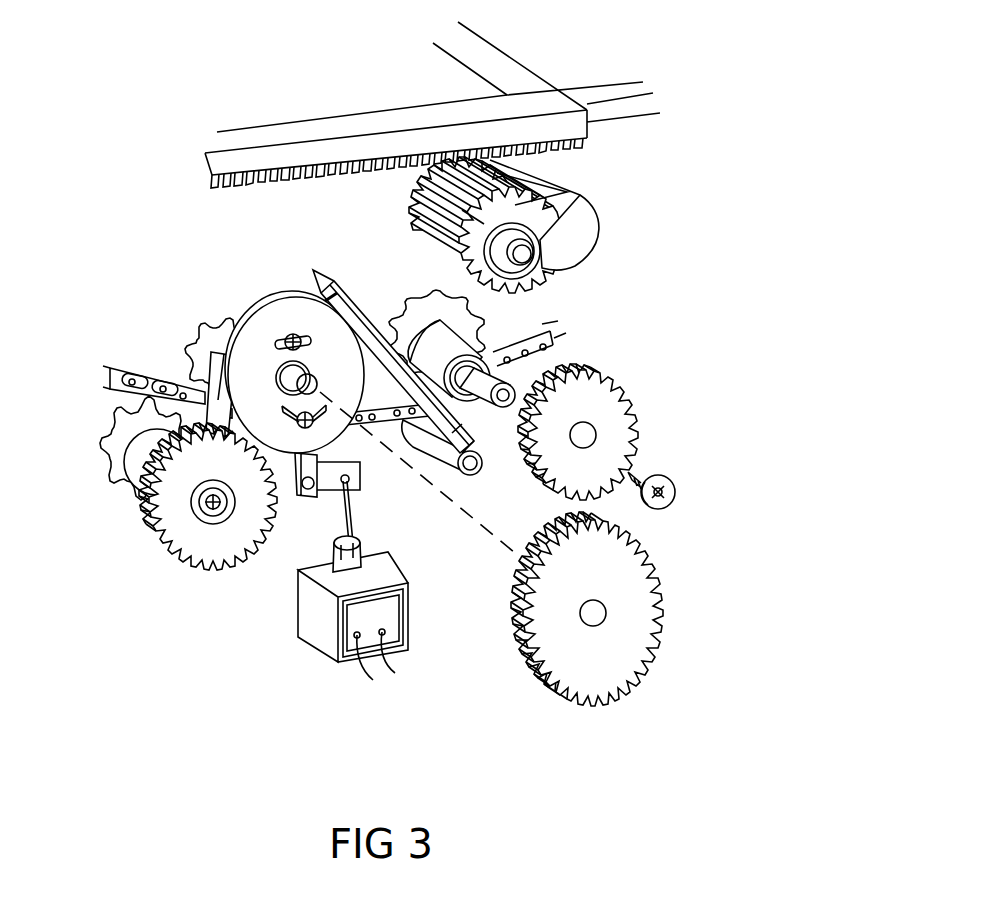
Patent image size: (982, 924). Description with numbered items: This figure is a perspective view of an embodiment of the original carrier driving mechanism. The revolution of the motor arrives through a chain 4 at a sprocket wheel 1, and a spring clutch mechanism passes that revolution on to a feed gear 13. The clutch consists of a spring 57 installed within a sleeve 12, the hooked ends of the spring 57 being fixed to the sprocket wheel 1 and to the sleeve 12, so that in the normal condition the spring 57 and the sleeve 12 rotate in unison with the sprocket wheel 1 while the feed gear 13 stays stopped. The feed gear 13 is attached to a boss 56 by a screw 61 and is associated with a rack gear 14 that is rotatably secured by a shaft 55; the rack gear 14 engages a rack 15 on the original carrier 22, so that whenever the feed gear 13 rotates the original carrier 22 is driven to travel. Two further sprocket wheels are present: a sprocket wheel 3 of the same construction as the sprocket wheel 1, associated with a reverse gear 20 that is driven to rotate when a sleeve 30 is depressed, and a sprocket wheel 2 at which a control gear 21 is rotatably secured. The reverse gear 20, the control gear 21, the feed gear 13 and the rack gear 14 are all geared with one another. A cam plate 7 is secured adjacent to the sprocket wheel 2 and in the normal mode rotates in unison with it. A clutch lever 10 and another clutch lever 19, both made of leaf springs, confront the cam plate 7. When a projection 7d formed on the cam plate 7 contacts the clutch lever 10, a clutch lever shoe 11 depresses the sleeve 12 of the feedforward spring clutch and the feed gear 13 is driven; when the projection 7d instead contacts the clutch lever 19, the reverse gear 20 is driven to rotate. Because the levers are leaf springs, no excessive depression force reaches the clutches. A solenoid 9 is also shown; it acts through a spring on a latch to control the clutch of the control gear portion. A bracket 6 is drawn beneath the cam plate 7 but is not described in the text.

The original carrier 22 is at (515, 66).
The rack 15 is at (570, 147).
The rack gear 14 is at (523, 202).
The shaft 55 is at (530, 257).
The sprocket wheel 1 is at (420, 297).
The sleeve 12 is at (477, 327).
The chain 4 is at (545, 343).
The spring 57 is at (477, 410).
The boss 56 is at (507, 408).
The clutch lever shoe 11 is at (462, 432).
The sprocket wheel 3 is at (97, 500).
The sleeve 30 is at (130, 500).
The sprocket wheel 2 is at (215, 327).
The clutch lever 19 is at (205, 360).
The cam plate 7 is at (272, 285).
The clutch lever 10 is at (348, 303).
The projection 7d is at (327, 310).
The reverse gear 20 is at (197, 545).
The bracket 6 is at (360, 480).
The solenoid 9 is at (325, 640).
The feed gear 13 is at (613, 432).
The screw 61 is at (670, 500).
The control gear 21 is at (633, 635).